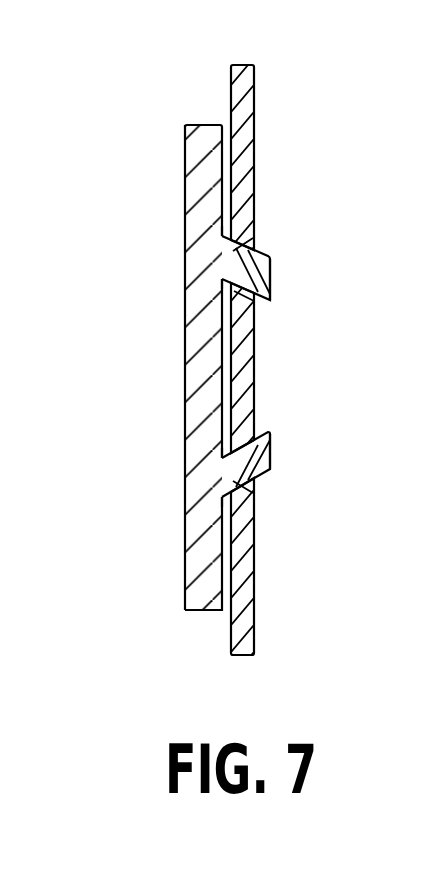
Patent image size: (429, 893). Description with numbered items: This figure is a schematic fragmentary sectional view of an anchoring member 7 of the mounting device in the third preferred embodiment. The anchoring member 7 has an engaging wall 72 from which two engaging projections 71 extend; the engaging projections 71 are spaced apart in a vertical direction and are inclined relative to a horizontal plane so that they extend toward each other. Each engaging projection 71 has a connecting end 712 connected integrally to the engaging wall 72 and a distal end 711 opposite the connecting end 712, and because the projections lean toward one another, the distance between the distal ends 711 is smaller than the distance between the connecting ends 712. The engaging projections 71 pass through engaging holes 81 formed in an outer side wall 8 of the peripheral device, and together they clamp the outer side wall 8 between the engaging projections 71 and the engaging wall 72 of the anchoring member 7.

The anchoring member 7 is at (207, 125).
The engaging projection 71 is at (240, 235).
The distal end 711 is at (270, 277).
The connecting end 712 is at (222, 258).
The engaging wall 72 is at (193, 168).
The outer side wall 8 is at (243, 88).
The engaging hole 81 is at (251, 246).